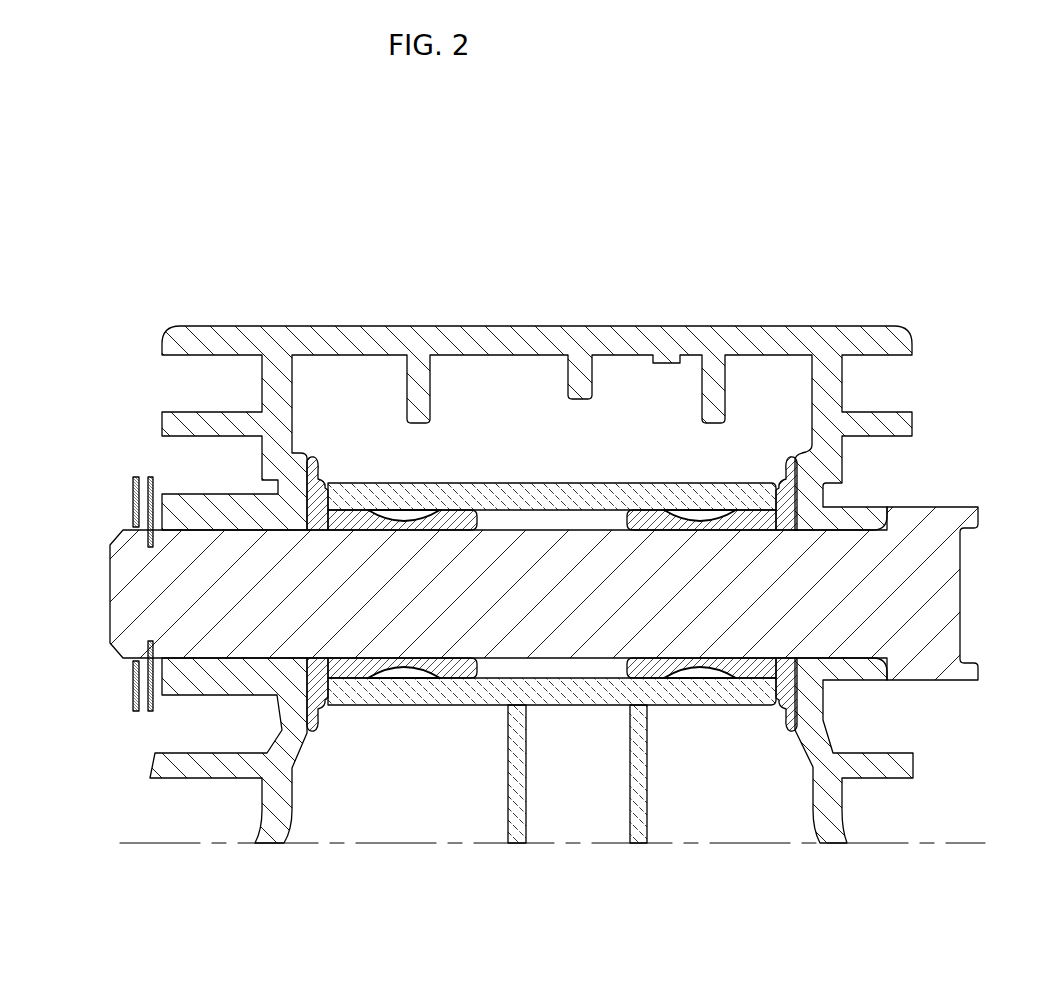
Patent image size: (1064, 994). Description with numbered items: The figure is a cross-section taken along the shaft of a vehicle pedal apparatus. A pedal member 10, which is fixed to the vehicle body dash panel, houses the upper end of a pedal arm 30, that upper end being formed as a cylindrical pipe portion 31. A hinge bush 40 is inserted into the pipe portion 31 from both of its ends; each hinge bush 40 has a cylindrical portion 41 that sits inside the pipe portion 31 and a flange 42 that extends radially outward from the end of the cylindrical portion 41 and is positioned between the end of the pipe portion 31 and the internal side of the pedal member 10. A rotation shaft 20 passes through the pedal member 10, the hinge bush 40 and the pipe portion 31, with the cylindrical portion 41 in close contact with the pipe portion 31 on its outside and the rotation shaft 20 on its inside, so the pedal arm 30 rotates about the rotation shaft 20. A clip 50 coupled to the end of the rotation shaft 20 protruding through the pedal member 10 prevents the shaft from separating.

The pedal member 10 is at (537, 347).
The rotation shaft 20 is at (945, 593).
The pedal arm 30 is at (552, 800).
The pipe portion 31 is at (707, 697).
The hinge bush 40 is at (554, 462).
The cylindrical portion 41 is at (453, 517).
The flange 42 is at (318, 455).
The clip 50 is at (148, 503).